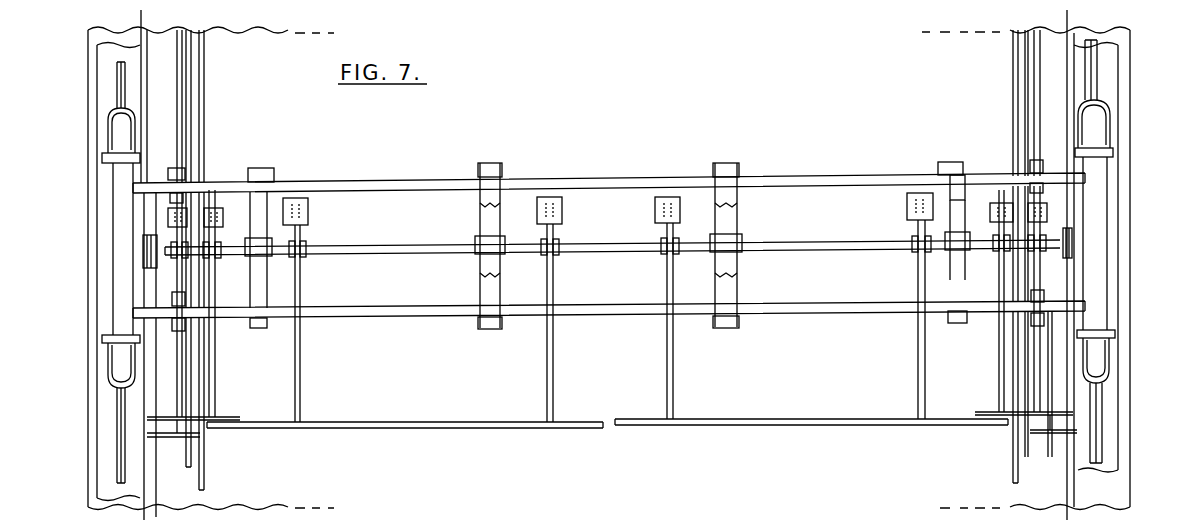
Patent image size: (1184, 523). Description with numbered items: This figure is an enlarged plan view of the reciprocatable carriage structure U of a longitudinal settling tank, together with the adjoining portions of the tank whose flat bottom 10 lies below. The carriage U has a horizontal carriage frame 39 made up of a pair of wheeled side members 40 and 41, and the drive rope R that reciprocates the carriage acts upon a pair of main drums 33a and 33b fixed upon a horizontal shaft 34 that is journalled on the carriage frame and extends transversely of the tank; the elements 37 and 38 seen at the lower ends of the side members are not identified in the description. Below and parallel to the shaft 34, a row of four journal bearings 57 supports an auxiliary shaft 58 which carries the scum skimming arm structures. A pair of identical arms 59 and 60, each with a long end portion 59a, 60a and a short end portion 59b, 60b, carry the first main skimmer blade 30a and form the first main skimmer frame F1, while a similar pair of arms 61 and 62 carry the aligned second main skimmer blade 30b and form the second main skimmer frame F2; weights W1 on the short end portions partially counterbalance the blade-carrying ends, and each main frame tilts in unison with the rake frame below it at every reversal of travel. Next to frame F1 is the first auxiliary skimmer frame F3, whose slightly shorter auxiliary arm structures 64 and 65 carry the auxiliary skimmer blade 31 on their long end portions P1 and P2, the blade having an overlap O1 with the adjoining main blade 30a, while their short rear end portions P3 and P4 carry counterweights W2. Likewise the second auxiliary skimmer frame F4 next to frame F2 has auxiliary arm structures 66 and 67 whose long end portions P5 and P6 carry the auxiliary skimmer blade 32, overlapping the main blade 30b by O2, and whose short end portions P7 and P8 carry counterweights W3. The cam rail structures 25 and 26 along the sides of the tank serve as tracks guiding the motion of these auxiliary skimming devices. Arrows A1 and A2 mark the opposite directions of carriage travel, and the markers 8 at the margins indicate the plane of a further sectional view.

The flat bottom 10 is at (136, 247).
The cam rail structure 25 is at (203, 470).
The cam rail structure 26 is at (1015, 458).
The main skimmer blade element 30a is at (403, 428).
The main skimmer blade element 30b is at (757, 425).
The auxiliary skimmer blade element 31 is at (175, 398).
The auxiliary skimmer blade element 32 is at (1041, 394).
The main drum 33a is at (150, 250).
The main drum 33b is at (1073, 255).
The horizontal shaft 34 is at (173, 236).
The left lower plunger 37 is at (118, 455).
The right lower plunger 38 is at (1103, 458).
The horizontal carriage frame 39 is at (609, 217).
The wheeled side member 40 is at (118, 188).
The wheeled side member 41 is at (1102, 315).
The journal bearing 57 is at (250, 247).
The auxiliary shaft 58 is at (765, 250).
The arm 59 is at (321, 323).
The long end portion 59a is at (300, 384).
The short end portion 59b is at (300, 240).
The arm 60 is at (530, 323).
The long end portion 60a is at (555, 383).
The short end portion 60b is at (560, 233).
The arm 61 is at (683, 321).
The arm 62 is at (907, 319).
The auxiliary arm structure 64 is at (200, 358).
The auxiliary arm structure 65 is at (183, 343).
The auxiliary arm structure 66 is at (985, 274).
The auxiliary arm structure 67 is at (1101, 288).
The section line 8 is at (592, 426).
The direction arrow A1 is at (615, 490).
The direction arrow A2 is at (611, 108).
The main skimmer frame F1 is at (423, 353).
The main skimmer frame F2 is at (796, 351).
The first auxiliary skimmer frame F3 is at (208, 357).
The second auxiliary skimmer frame F4 is at (1008, 351).
The overlap O1 is at (240, 446).
The overlap O2 is at (975, 444).
The long end portion P1 is at (180, 382).
The long end portion P2 is at (217, 385).
The short rear end portion P3 is at (167, 217).
The short rear end portion P4 is at (218, 235).
The long end portion P5 is at (1002, 378).
The long end portion P6 is at (1038, 398).
The short end portion P7 is at (998, 243).
The short end portion P8 is at (1040, 232).
The drive rope R is at (147, 113).
The reciprocatable carriage structure U is at (610, 276).
The weight W1 is at (292, 197).
The counterweight W2 is at (214, 207).
The counterweight W3 is at (1036, 202).